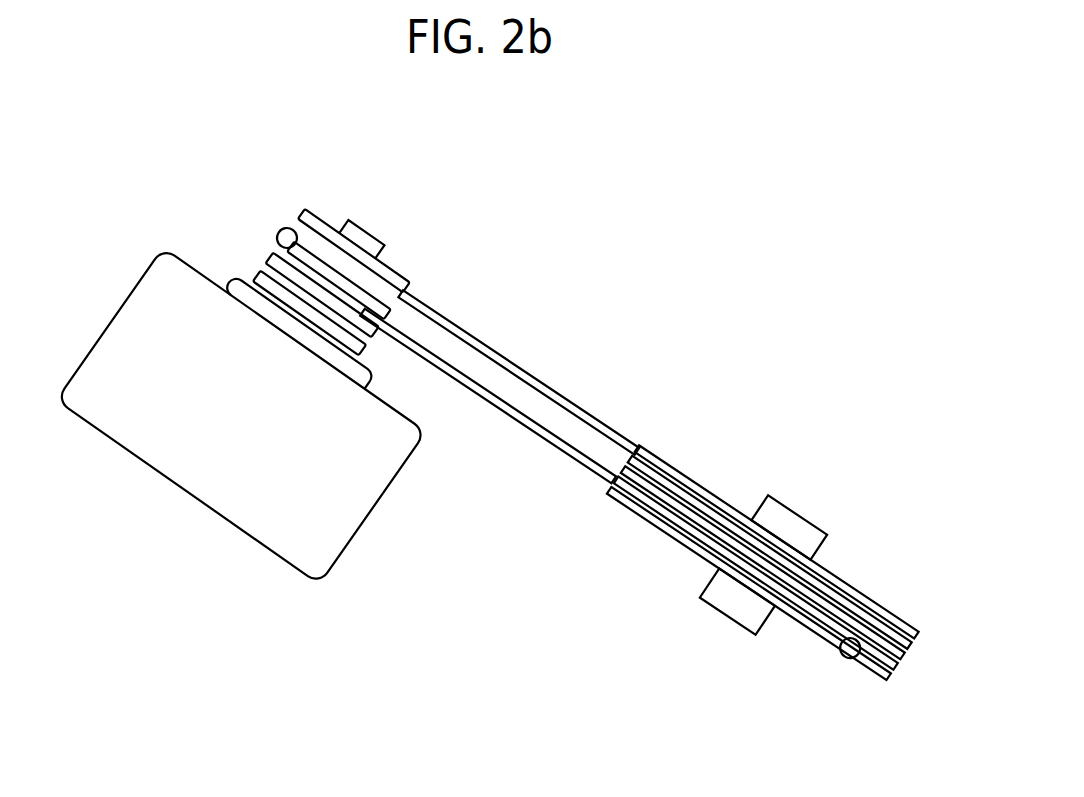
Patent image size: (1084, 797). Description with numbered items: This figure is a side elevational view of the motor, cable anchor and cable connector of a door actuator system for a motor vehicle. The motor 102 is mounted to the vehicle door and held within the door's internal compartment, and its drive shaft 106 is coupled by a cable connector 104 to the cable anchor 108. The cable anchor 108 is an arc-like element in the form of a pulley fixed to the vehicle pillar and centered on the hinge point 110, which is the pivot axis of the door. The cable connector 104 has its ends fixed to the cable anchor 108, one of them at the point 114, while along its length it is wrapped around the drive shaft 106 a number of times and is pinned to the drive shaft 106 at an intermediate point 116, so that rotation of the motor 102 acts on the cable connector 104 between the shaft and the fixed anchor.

The motor 102 is at (245, 518).
The cable connector 104 is at (523, 371).
The drive shaft 106 is at (387, 248).
The cable anchor 108 is at (713, 497).
The hinge point 110 is at (728, 617).
The point 114 is at (847, 657).
The intermediate point 116 is at (280, 231).